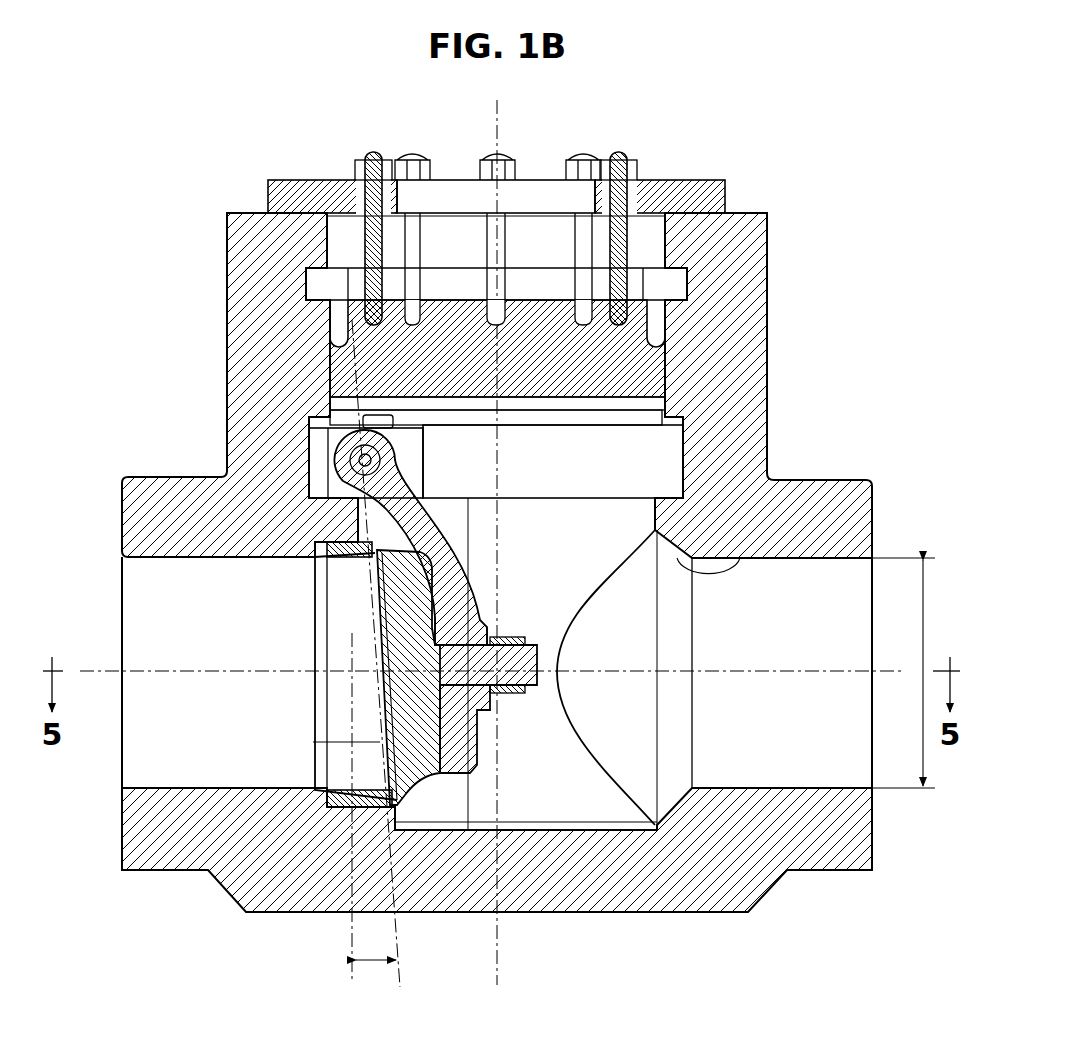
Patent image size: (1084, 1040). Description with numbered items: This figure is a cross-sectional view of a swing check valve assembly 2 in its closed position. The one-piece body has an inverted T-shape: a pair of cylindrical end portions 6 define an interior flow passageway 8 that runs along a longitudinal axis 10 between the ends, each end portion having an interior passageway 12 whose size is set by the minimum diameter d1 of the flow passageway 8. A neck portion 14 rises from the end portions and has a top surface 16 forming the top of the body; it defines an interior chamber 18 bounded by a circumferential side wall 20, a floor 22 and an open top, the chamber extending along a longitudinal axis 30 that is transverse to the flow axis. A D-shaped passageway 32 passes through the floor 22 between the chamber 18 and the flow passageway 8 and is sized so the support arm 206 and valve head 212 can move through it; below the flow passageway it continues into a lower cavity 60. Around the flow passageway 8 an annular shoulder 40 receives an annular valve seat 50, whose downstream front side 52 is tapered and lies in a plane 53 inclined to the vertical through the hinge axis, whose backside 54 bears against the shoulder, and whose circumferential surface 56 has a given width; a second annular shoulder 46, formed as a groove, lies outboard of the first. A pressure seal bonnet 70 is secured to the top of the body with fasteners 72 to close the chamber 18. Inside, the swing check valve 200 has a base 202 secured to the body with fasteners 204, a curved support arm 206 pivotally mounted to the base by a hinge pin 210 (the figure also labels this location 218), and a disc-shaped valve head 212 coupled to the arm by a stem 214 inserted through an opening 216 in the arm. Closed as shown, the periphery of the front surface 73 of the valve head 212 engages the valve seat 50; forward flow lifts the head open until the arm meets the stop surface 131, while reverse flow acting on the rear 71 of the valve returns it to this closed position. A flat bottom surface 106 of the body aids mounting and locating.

The swing check valve assembly 2 is at (843, 367).
The cylindrical end portions 6 is at (162, 870).
The interior flow passageway 8 is at (850, 720).
The longitudinal axis 10 is at (880, 670).
The interior passageway 12 is at (175, 730).
The neck portion 14 is at (750, 307).
The top surface 16 is at (753, 213).
The interior chamber 18 is at (652, 443).
The circumferential side wall 20 is at (685, 458).
The floor 22 is at (340, 458).
The longitudinal axis of the chamber 30 is at (497, 957).
The D-shaped passageway 32 is at (594, 530).
The annular shoulder 40 is at (350, 790).
The second annular shoulder 46 is at (313, 717).
The annular valve seat 50 is at (333, 807).
The front side of the valve seat 52 is at (400, 768).
The plane 53 is at (402, 972).
The backside of the valve seat 54 is at (327, 773).
The circumferential surface of the valve seat 56 is at (340, 667).
The cavity 60 is at (645, 785).
The pressure seal bonnet 70 is at (530, 160).
The rear of the valve 71 is at (435, 600).
The fasteners 72 is at (382, 156).
The front surface of the valve head 73 is at (690, 285).
The flat bottom surface 106 is at (745, 912).
The stop surface 131 is at (817, 480).
The swing check valve 200 is at (547, 805).
The base 202 is at (317, 485).
The fasteners 204 is at (368, 375).
The support arm 206 is at (460, 535).
The hinge pin 210 is at (380, 425).
The valve head 212 is at (453, 708).
The stem 214 is at (538, 660).
The opening 216 is at (480, 625).
The retainer band 218 is at (496, 417).
The minimum diameter d1 is at (923, 583).